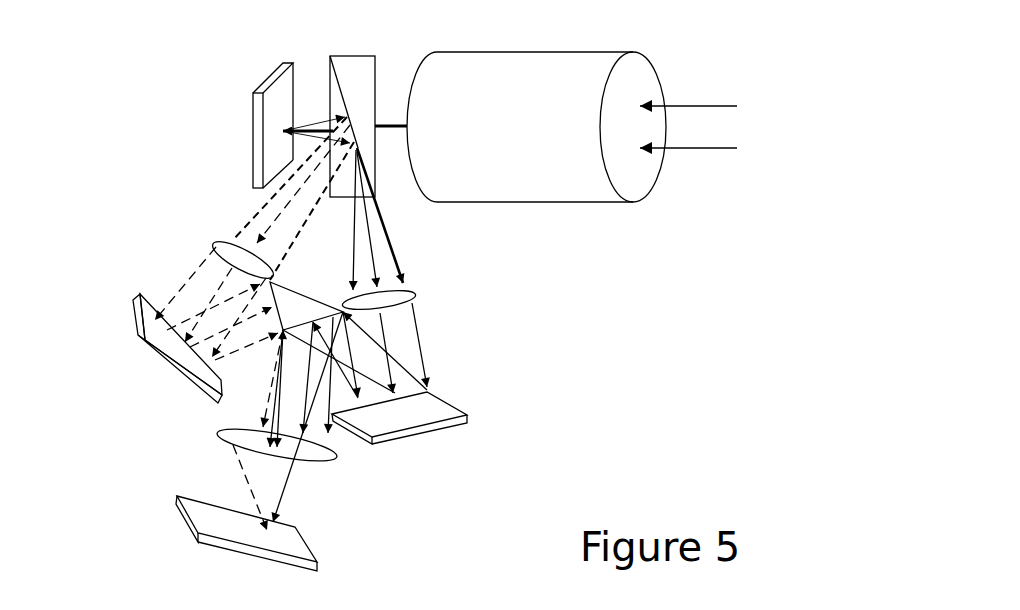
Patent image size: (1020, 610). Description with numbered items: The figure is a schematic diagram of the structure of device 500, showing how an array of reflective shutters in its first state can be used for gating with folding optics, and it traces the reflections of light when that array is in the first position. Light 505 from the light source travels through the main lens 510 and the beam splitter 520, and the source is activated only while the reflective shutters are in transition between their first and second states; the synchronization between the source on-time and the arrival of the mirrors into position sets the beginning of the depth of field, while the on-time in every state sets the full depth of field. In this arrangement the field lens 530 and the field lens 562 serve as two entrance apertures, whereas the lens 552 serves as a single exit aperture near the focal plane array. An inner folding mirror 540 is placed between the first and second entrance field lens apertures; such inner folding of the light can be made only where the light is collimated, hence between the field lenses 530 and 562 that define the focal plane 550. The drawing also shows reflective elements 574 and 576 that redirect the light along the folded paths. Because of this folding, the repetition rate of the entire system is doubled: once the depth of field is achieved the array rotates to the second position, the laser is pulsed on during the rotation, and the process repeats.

The device 500 is at (109, 113).
The light 505 is at (718, 108).
The main lens 510 is at (545, 51).
The beam splitter 520 is at (352, 54).
The field lens 530 is at (227, 241).
The inner folding mirror 540 is at (300, 287).
The focal plane 550 is at (180, 525).
The lens 552 is at (240, 445).
The field lens 562 is at (408, 282).
The reflective element 574 is at (458, 402).
The mirror 576 is at (140, 346).